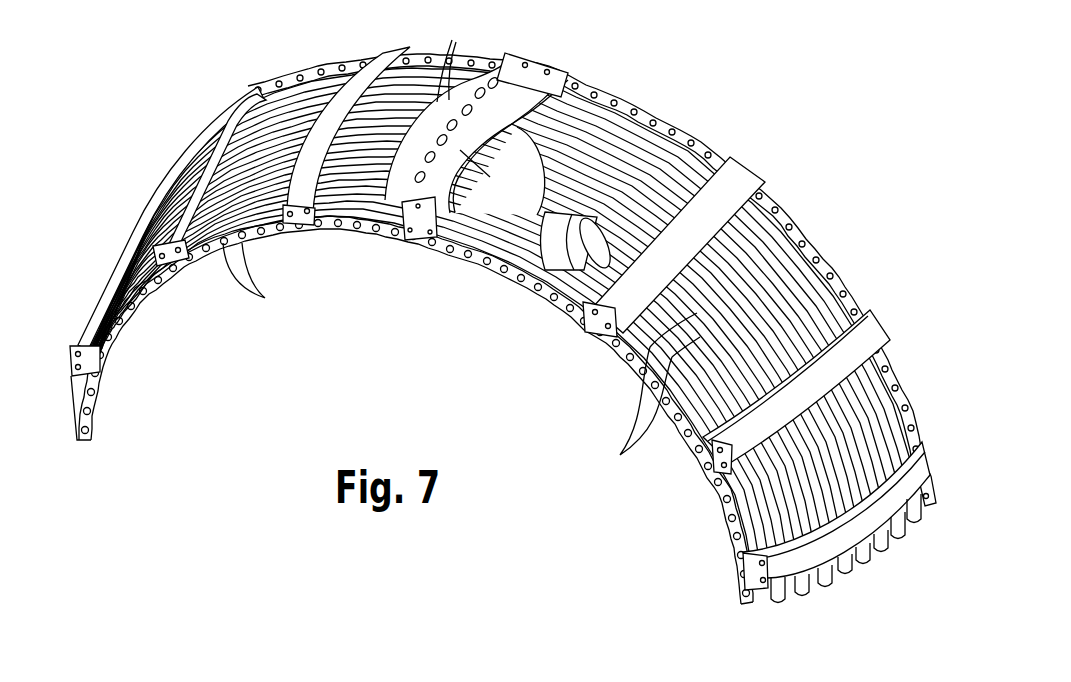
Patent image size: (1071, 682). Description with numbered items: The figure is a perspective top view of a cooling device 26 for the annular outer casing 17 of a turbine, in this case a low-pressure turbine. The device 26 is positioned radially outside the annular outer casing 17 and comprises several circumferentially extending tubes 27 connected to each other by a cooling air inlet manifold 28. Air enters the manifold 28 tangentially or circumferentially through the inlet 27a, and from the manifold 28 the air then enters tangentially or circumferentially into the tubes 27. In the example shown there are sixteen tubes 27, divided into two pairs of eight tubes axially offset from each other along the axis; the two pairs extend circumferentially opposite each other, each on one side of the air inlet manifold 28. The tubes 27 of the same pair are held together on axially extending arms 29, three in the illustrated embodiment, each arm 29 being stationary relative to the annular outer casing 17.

The cooling device 26 is at (697, 91).
The outer casing 17 is at (552, 278).
The tubes 27 is at (452, 40).
The inlet 27a is at (584, 322).
The cooling air inlet manifold 28 is at (449, 215).
The arm 29 is at (365, 55).